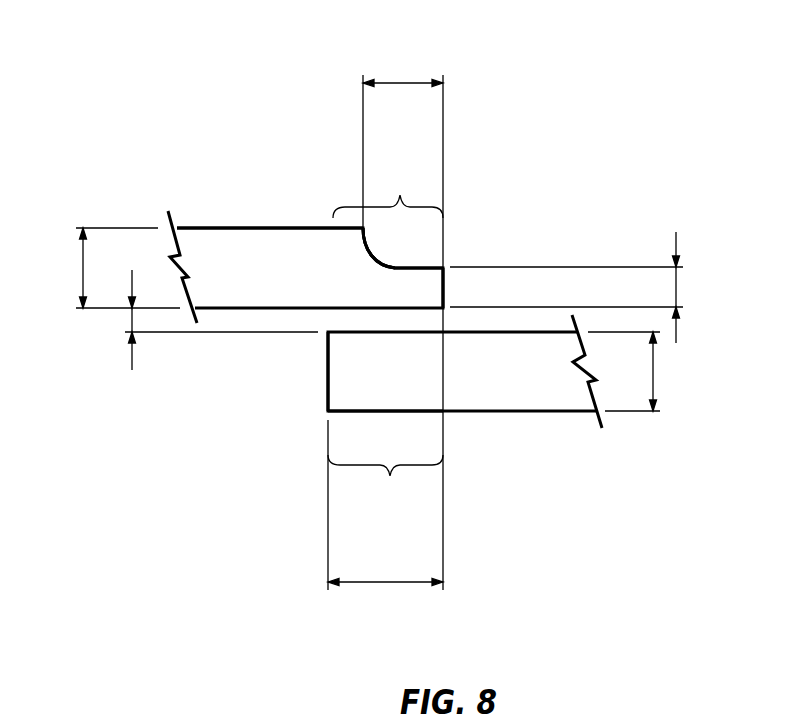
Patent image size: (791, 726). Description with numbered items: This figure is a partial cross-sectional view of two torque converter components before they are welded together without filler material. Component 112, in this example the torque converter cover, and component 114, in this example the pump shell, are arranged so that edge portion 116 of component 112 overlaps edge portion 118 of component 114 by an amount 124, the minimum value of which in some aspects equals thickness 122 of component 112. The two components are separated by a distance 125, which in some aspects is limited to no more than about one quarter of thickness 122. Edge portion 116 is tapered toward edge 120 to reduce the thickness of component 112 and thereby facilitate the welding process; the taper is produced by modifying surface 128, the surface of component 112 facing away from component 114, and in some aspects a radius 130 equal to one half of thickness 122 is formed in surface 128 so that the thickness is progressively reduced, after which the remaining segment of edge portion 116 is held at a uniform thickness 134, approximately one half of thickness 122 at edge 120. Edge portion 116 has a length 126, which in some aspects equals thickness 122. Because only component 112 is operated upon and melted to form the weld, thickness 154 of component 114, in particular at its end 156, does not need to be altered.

The component 112 is at (224, 216).
The component 114 is at (565, 413).
The edge portion 116 is at (400, 195).
The edge portion 118 is at (390, 476).
The edge 120 is at (446, 286).
The thickness 122 is at (83, 265).
The amount 124 is at (385, 583).
The distance 125 is at (132, 320).
The length 126 is at (402, 78).
The surface 128 is at (277, 227).
The radius 130 is at (376, 255).
The thickness 134 is at (676, 290).
The thickness 154 is at (653, 372).
The end 156 is at (328, 372).